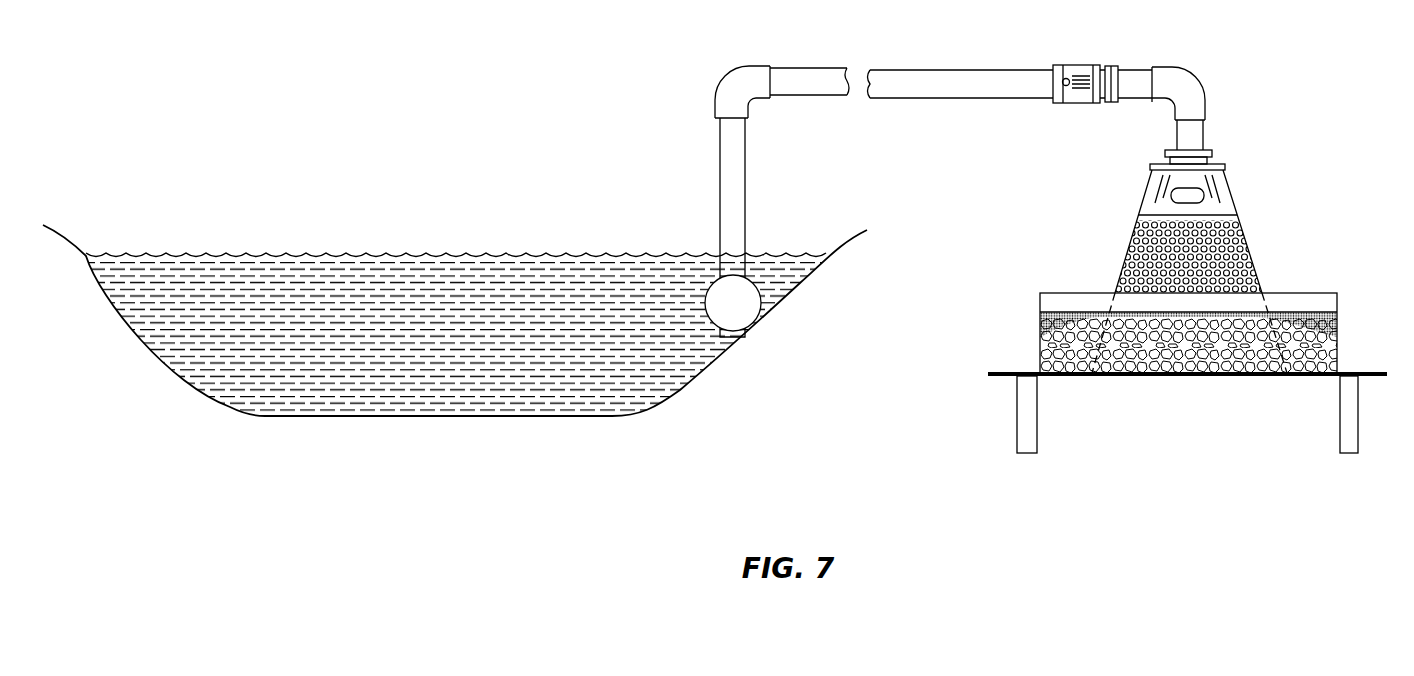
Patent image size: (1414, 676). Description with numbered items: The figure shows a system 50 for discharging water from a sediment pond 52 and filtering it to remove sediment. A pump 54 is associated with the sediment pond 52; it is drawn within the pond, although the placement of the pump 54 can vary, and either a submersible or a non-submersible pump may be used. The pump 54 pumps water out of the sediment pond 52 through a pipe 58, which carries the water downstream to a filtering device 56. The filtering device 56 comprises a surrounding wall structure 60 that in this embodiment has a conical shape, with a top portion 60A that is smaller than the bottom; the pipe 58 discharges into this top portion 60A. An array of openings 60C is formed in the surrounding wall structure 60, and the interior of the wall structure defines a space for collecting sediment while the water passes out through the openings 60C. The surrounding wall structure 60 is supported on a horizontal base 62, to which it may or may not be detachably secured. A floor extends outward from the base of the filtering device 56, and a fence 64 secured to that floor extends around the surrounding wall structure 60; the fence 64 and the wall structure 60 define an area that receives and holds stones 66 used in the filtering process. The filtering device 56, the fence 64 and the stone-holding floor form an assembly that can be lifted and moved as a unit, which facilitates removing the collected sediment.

The system for discharging and filtering water 50 is at (343, 163).
The sediment pond 52 is at (443, 417).
The pump 54 is at (748, 313).
The filtering device 56 is at (1200, 292).
The pipe 58 is at (938, 85).
The surrounding wall structure 60 is at (1188, 252).
The top portion 60A is at (1220, 168).
The array of openings 60C is at (1255, 265).
The horizontal base 62 is at (1247, 376).
The fence 64 is at (1337, 328).
The gravel media 66 is at (1155, 360).